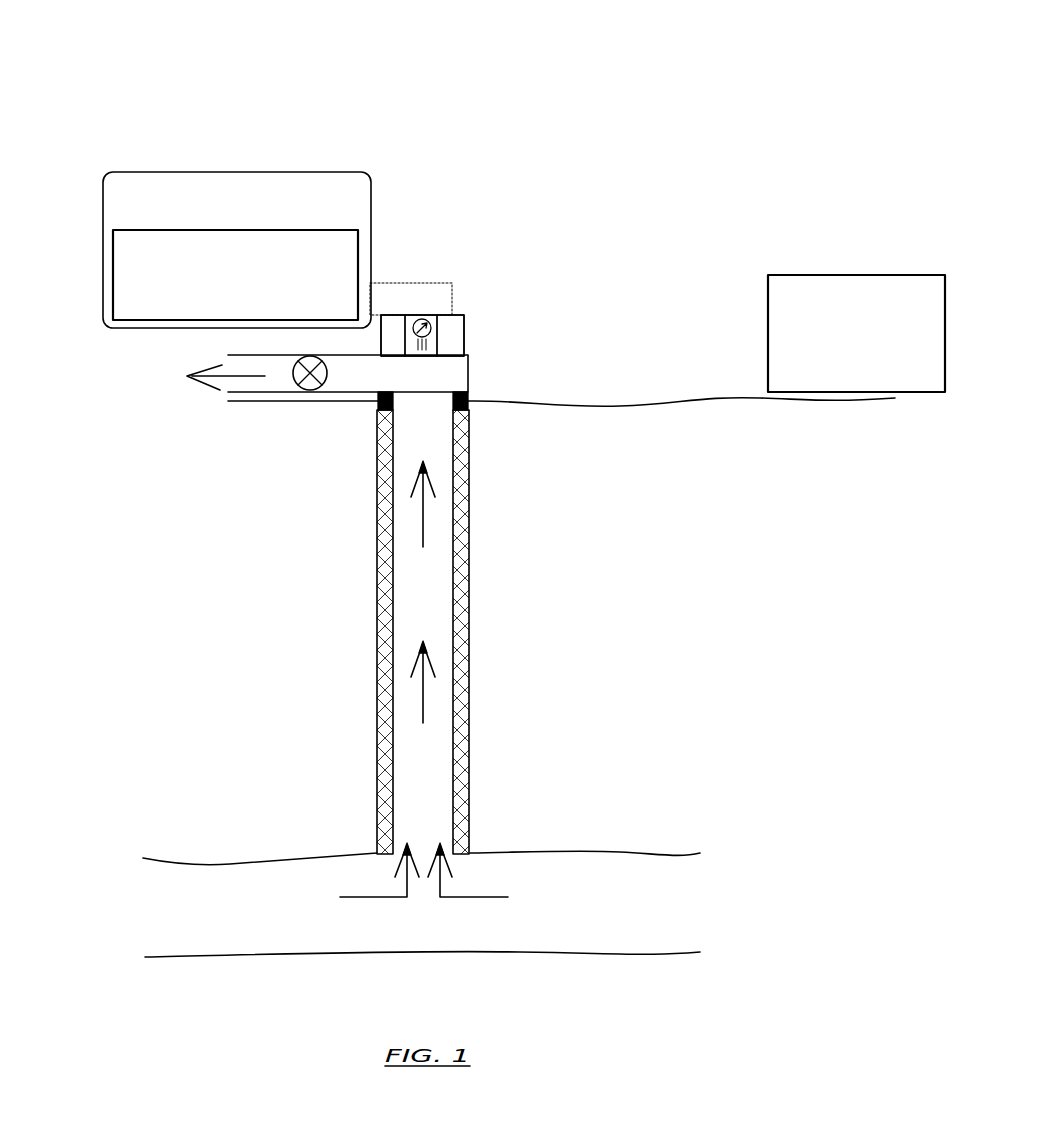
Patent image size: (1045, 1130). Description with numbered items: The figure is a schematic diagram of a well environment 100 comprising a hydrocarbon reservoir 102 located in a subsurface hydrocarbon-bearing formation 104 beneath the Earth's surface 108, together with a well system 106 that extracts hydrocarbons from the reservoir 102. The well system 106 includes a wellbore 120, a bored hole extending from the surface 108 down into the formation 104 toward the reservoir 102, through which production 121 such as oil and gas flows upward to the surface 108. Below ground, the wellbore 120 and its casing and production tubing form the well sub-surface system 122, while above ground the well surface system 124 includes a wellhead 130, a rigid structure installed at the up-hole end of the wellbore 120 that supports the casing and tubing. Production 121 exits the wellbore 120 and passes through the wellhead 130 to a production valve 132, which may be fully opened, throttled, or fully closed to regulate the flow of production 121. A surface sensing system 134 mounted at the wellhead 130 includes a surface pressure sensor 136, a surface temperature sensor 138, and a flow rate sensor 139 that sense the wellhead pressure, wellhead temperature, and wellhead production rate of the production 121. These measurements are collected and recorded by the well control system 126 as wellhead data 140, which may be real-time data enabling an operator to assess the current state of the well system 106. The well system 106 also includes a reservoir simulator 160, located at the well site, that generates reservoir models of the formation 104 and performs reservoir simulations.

The well environment 100 is at (566, 40).
The hydrocarbon reservoir 102 is at (598, 923).
The hydrocarbon-bearing formation 104 is at (616, 711).
The well system 106 is at (184, 127).
The surface 108 is at (579, 412).
The wellbore 120 is at (480, 547).
The production 121 is at (148, 401).
The well sub-surface system 122 is at (341, 636).
The well surface system 124 is at (642, 220).
The well control system 126 is at (149, 225).
The wellhead 130 is at (478, 385).
The production valve 132 is at (310, 390).
The surface sensing system 134 is at (474, 328).
The surface pressure sensor 136 is at (420, 314).
The surface temperature sensor 138 is at (452, 314).
The flow rate sensor 139 is at (393, 314).
The wellhead data 140 is at (220, 297).
The reservoir simulator 160 is at (842, 366).